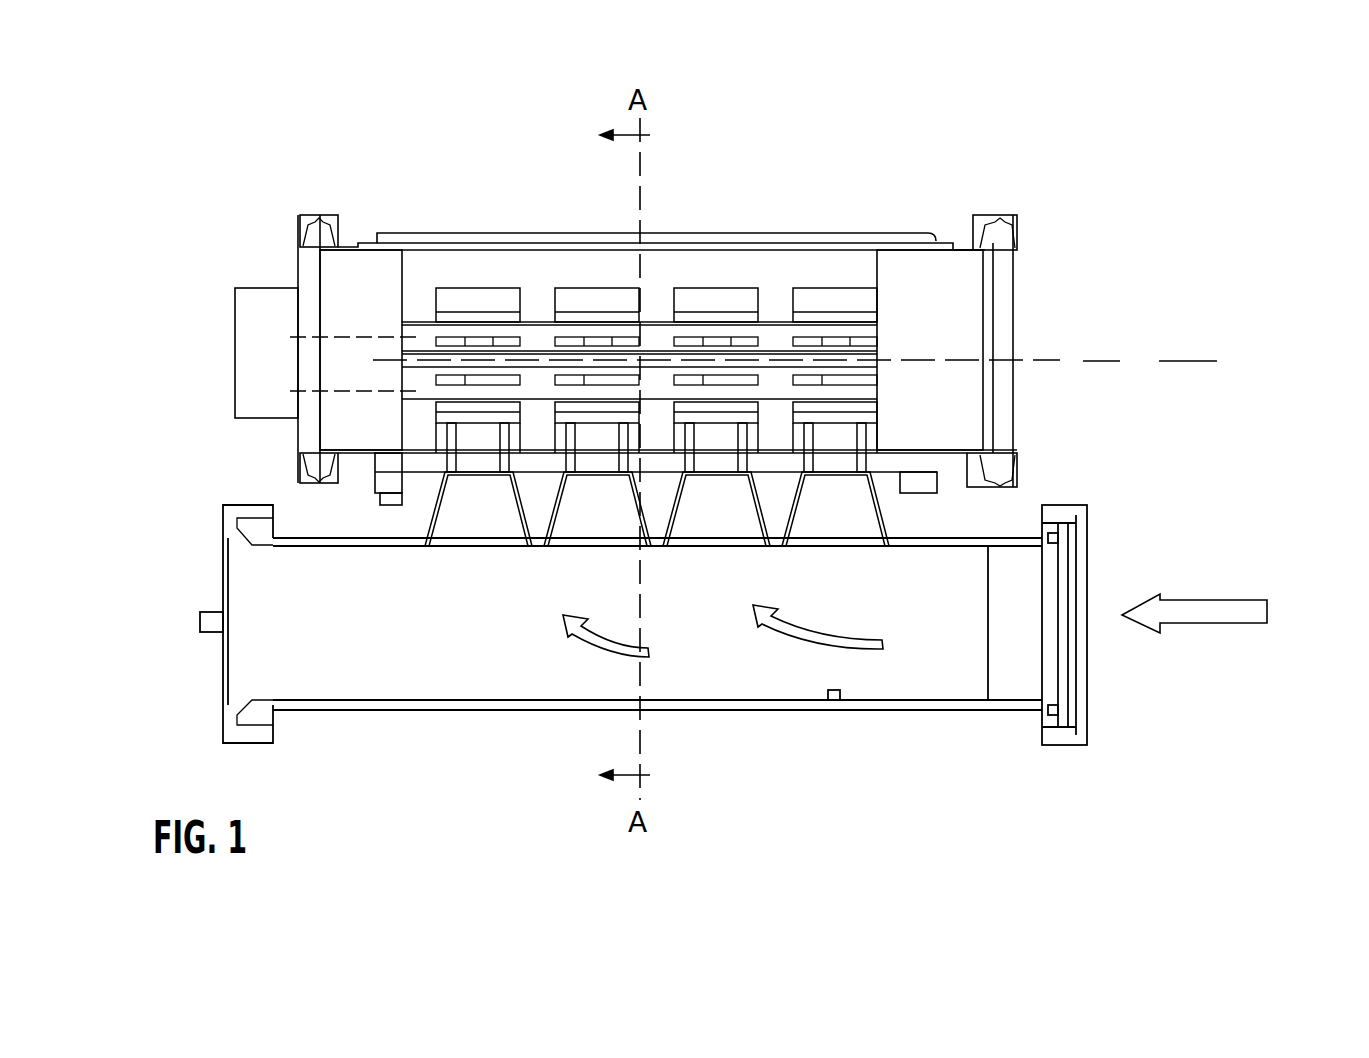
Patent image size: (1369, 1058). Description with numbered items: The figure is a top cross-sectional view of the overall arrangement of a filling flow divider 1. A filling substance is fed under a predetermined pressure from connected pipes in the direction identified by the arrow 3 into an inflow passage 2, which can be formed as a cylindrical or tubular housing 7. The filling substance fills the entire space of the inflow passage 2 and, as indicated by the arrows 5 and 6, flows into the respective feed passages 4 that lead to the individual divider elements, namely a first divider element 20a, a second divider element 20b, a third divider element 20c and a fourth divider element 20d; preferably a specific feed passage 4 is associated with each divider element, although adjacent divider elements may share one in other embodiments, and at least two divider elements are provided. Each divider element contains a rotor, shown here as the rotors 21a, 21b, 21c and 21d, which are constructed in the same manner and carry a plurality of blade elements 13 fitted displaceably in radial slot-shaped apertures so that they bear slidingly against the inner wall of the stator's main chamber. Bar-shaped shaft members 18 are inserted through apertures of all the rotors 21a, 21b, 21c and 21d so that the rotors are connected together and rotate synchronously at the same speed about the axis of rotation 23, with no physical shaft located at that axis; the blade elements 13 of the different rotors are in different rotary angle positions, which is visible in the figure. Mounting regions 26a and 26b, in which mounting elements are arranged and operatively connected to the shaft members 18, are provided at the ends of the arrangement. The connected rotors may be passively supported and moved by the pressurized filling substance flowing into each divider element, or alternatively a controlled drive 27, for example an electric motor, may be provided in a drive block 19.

The filling flow divider 1 is at (1196, 235).
The inflow passage 2 is at (925, 645).
The arrow 3 is at (1261, 598).
The feed passage 4 is at (838, 528).
The arrow 5 is at (823, 640).
The arrow 6 is at (608, 655).
The housing 7 is at (960, 705).
The blade element 13 is at (447, 297).
The shaft member 18 is at (330, 390).
The drive block 19 is at (277, 330).
The first divider element 20a is at (858, 258).
The second divider element 20b is at (720, 260).
The third divider element 20c is at (613, 268).
The fourth divider element 20d is at (483, 265).
The rotor 21a is at (877, 331).
The rotor 21b is at (738, 327).
The rotor 21c is at (628, 332).
The rotor 21d is at (503, 325).
The axis of rotation 23 is at (1209, 362).
The mounting region 26a is at (965, 278).
The mounting region 26b is at (356, 290).
The controlled drive 27 is at (280, 375).